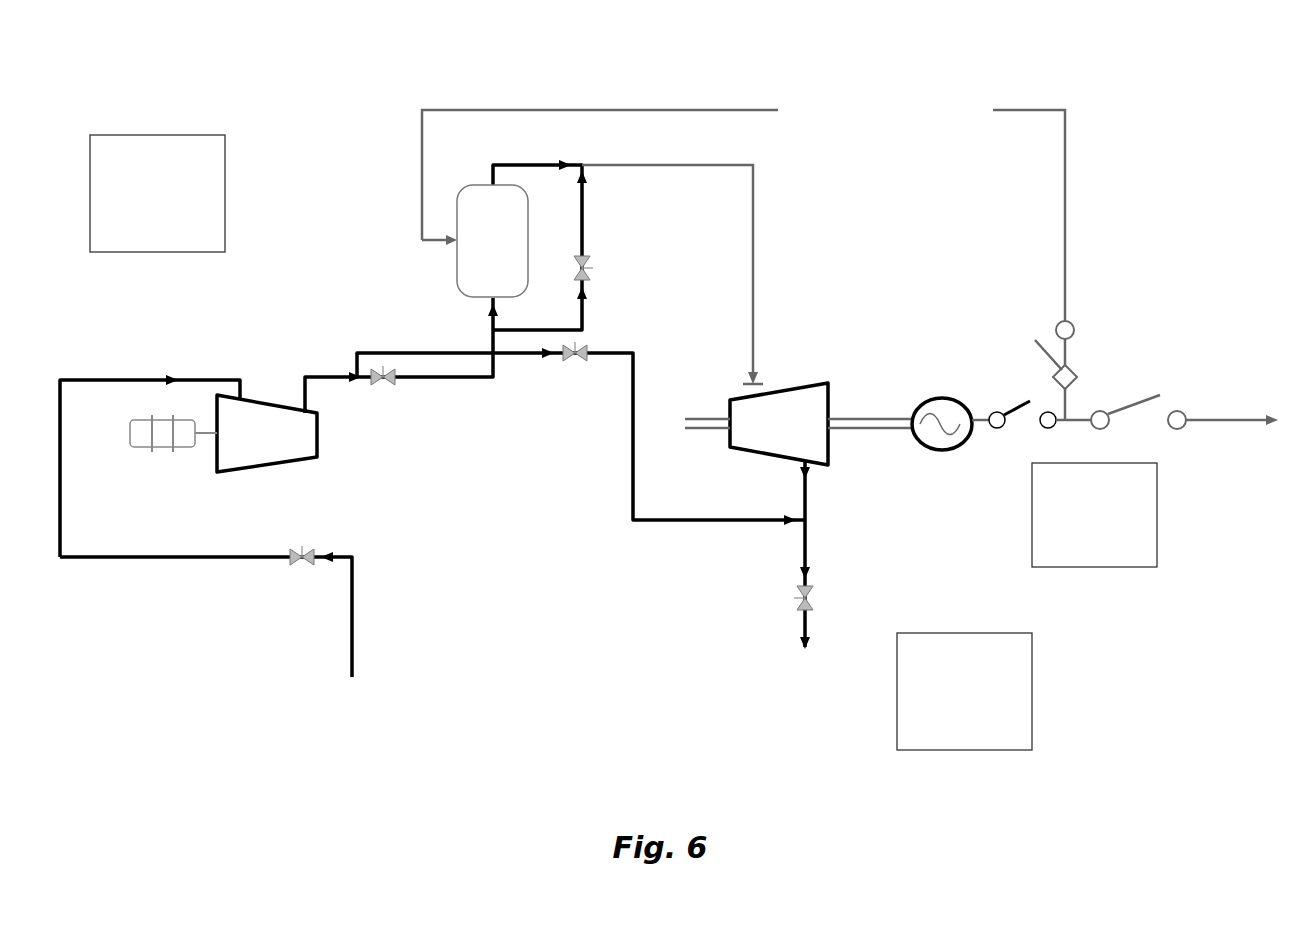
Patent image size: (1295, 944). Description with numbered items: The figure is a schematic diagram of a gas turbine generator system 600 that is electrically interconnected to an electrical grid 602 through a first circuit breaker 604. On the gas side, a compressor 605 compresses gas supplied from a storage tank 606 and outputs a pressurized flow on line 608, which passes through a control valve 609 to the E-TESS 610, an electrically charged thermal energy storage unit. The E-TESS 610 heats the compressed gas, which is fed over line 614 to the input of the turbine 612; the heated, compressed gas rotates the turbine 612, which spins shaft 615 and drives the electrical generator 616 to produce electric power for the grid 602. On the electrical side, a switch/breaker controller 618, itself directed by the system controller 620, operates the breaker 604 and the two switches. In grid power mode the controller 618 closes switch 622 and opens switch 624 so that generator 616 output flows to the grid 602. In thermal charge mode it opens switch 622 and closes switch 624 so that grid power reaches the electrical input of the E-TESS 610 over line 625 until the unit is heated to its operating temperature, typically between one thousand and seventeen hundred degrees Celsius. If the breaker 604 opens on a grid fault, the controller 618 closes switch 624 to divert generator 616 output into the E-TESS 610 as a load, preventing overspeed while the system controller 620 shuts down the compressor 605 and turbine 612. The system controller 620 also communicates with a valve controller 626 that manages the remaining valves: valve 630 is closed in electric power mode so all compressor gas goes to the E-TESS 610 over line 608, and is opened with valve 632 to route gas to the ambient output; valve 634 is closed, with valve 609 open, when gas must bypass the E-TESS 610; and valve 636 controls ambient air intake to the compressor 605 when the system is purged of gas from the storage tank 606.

The gas turbine generator system 600 is at (680, 40).
The electrical grid 602 is at (1200, 425).
The first circuit breaker 604 is at (1122, 410).
The compressor 605 is at (277, 400).
The storage tank 606 is at (165, 450).
The line 608 is at (343, 380).
The control valve 609 is at (375, 363).
The E-TESS 610 is at (475, 187).
The turbine 612 is at (828, 465).
The line 614 is at (755, 218).
The shaft 615 is at (867, 432).
The electrical generator 616 is at (955, 400).
The switch/breaker controller 618 is at (1094, 515).
The system controller 620 is at (964, 691).
The switch 622 is at (1025, 400).
The switch 624 is at (1070, 372).
The line 625 is at (1067, 210).
The valve controller 626 is at (157, 193).
The valve 630 is at (590, 345).
The valve 632 is at (795, 583).
The valve 634 is at (590, 258).
The valve 636 is at (285, 555).